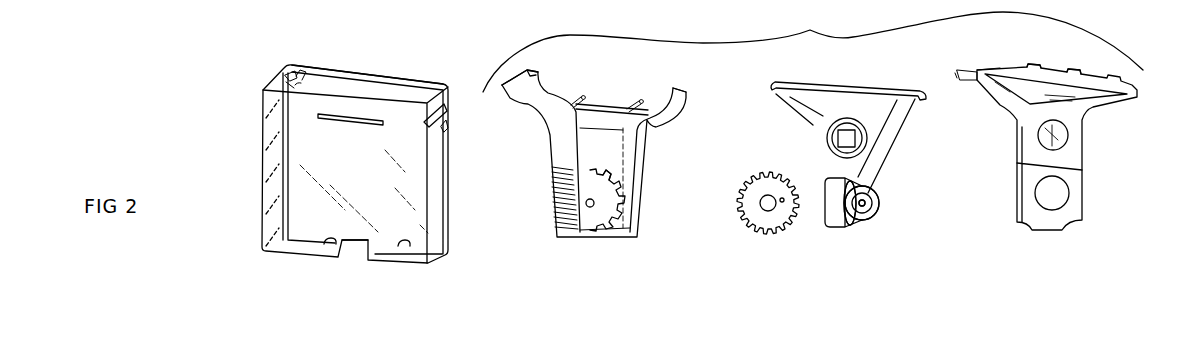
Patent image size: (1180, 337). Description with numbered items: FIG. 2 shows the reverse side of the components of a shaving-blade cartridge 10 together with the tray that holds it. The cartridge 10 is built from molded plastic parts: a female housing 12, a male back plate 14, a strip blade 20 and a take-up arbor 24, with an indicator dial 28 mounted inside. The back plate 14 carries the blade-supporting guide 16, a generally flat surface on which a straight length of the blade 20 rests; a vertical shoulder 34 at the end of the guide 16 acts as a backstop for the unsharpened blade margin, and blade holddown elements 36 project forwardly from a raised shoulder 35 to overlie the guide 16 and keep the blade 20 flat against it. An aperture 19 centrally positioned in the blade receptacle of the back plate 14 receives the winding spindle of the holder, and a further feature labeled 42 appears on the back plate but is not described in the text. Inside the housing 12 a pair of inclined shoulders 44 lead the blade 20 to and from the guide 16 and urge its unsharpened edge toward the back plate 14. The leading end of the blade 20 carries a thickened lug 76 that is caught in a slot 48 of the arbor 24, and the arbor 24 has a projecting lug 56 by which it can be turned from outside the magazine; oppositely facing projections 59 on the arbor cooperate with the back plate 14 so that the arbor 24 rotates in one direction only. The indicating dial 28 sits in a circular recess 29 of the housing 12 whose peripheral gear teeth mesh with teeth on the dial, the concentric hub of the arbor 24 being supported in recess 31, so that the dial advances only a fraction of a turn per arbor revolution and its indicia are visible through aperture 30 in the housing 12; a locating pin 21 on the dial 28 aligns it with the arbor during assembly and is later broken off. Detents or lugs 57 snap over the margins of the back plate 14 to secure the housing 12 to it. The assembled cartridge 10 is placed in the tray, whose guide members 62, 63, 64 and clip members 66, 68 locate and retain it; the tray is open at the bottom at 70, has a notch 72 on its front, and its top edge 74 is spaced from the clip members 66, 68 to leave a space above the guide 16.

The cartridge 10 is at (813, 47).
The female housing 12 is at (637, 227).
The male back plate 14 is at (1082, 160).
The blade-supporting guide 16 is at (957, 70).
The aperture 19 is at (1043, 140).
The strip blade 20 is at (827, 82).
The locating pin 21 is at (784, 203).
The take-up arbor 24 is at (820, 194).
The indicator dial 28 is at (762, 217).
The circular recess 29 is at (610, 198).
The aperture 30 is at (612, 177).
The recess 31 is at (590, 217).
The vertical shoulder 34 is at (972, 68).
The raised shoulder 35 is at (1003, 67).
The blade holddown elements 36 is at (989, 62).
The opening 42 is at (1067, 132).
The shoulders 44 is at (625, 115).
The slot 48 is at (873, 195).
The projecting lug 56 is at (833, 192).
The detents or lugs 57 is at (530, 70).
The projections 59 is at (843, 227).
The guide member 62 is at (263, 108).
The guide member 63 is at (347, 118).
The guide member 64 is at (424, 124).
The clip member 66 is at (290, 92).
The clip member 68 is at (447, 130).
The open bottom 70 is at (378, 247).
The notch 72 is at (355, 257).
The top edge 74 is at (363, 70).
The bearing 76 is at (857, 137).